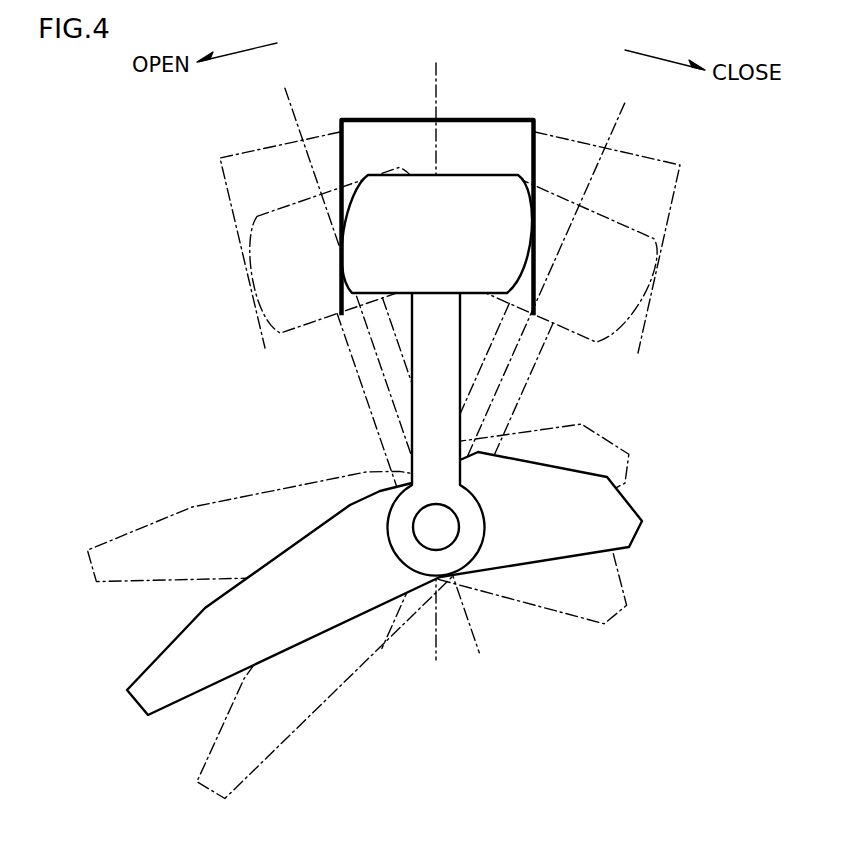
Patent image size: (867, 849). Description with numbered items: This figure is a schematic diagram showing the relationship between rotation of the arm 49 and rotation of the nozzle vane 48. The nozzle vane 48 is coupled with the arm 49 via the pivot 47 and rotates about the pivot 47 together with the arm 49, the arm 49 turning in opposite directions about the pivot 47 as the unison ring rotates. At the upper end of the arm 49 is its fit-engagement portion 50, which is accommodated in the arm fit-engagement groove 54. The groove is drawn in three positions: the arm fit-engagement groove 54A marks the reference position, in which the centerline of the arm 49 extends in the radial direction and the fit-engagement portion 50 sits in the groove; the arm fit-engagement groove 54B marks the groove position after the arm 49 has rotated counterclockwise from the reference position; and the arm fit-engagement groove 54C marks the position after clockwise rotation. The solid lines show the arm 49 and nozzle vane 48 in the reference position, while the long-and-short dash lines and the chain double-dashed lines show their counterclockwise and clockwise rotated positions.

The pivot 47 is at (447, 532).
The nozzle vane 48 is at (617, 515).
The arm 49 is at (424, 406).
The fit-engagement portion 50 is at (467, 190).
The arm fit-engagement groove 54 is at (451, 216).
The arm fit-engagement groove (reference position) 54A is at (497, 137).
The arm fit-engagement groove (counterclockwise position) 54B is at (255, 165).
The arm fit-engagement groove (clockwise position) 54C is at (647, 175).